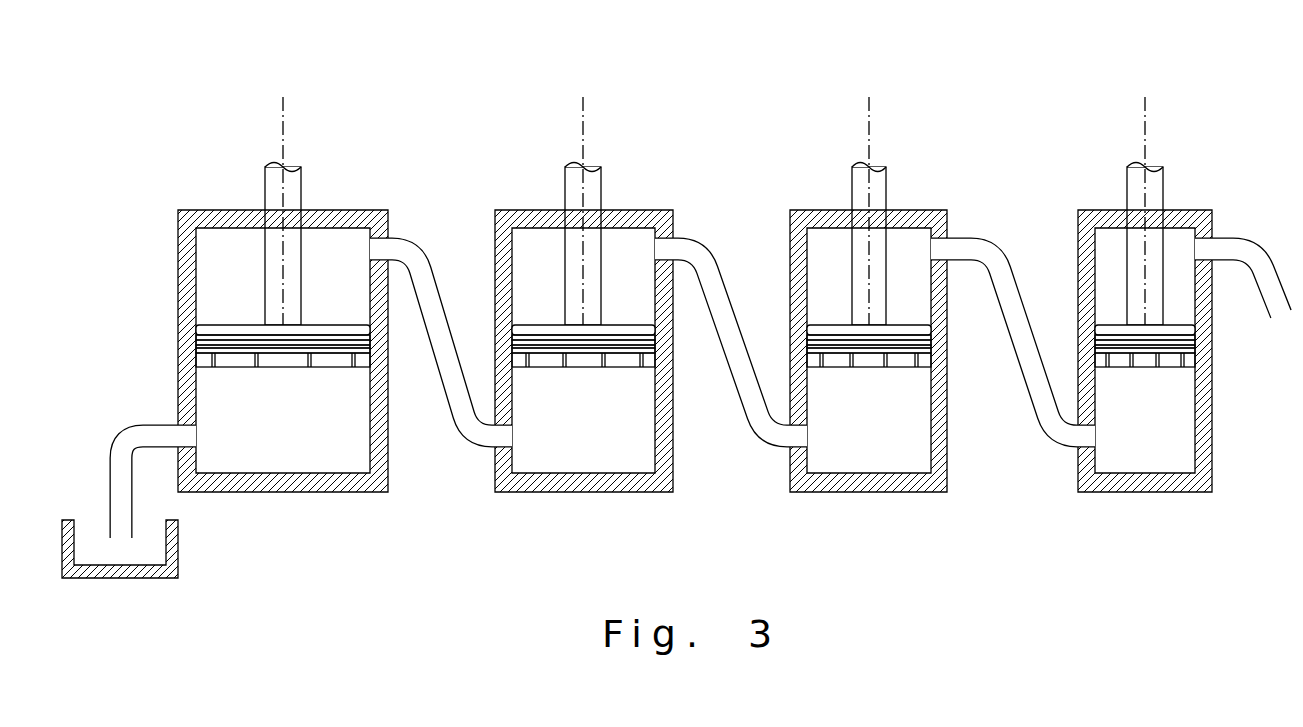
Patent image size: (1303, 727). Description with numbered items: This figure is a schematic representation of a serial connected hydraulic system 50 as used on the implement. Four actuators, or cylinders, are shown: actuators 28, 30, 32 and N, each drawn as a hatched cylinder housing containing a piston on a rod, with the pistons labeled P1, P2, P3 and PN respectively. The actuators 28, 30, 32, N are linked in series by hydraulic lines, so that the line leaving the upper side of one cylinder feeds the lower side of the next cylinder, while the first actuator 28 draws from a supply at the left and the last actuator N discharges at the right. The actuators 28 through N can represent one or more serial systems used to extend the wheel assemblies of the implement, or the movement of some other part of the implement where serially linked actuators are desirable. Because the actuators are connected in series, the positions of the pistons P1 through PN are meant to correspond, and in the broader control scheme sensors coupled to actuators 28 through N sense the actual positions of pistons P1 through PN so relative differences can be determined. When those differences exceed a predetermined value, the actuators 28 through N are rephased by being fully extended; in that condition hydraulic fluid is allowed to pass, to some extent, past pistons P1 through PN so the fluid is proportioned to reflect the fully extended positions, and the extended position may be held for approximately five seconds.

The serial connected hydraulic system 50 is at (202, 89).
The actuator 28 is at (178, 305).
The actuator 30 is at (528, 210).
The actuator 32 is at (918, 210).
The actuator N is at (1196, 210).
The piston P1 is at (291, 368).
The piston P2 is at (585, 368).
The piston P3 is at (865, 370).
The piston PN is at (1170, 370).